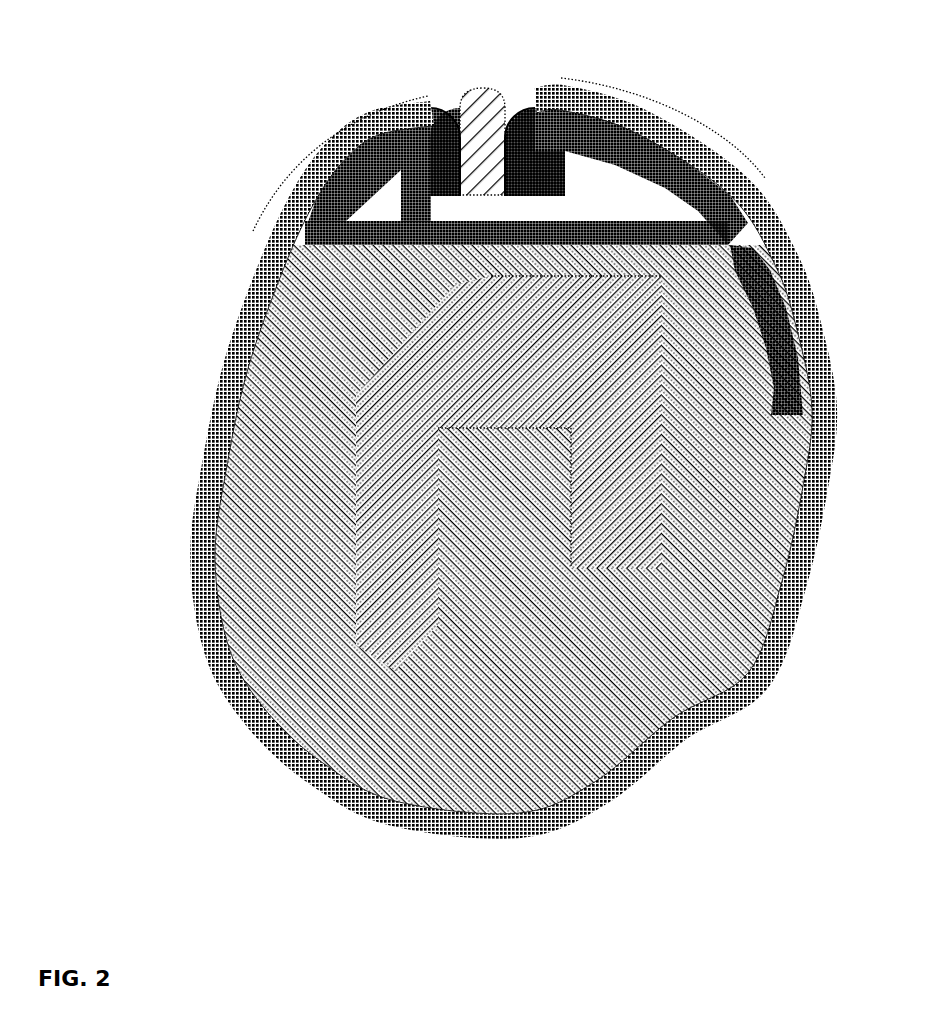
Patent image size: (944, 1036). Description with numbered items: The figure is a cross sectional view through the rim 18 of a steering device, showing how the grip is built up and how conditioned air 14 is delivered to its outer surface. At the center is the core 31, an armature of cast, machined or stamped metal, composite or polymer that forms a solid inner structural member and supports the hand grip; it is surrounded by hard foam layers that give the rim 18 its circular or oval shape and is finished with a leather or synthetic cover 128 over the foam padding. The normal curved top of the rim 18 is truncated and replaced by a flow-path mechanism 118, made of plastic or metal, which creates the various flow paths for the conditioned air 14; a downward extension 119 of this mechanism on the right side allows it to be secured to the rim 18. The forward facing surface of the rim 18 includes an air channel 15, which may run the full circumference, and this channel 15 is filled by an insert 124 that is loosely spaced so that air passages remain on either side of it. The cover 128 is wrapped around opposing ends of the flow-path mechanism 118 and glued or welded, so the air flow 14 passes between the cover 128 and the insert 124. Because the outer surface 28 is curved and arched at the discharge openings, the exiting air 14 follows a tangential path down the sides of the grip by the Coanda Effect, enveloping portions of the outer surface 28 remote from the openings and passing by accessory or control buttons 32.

The conditioned air 14 is at (245, 200).
The air channel 15 is at (693, 133).
The rim 18 is at (473, 425).
The outer surface 28 is at (210, 345).
The core 31 is at (350, 450).
The control button 32 is at (265, 665).
The flow-path mechanism 118 is at (612, 190).
The downward extension 119 is at (797, 272).
The insert 124 is at (462, 110).
The cover 128 is at (205, 395).